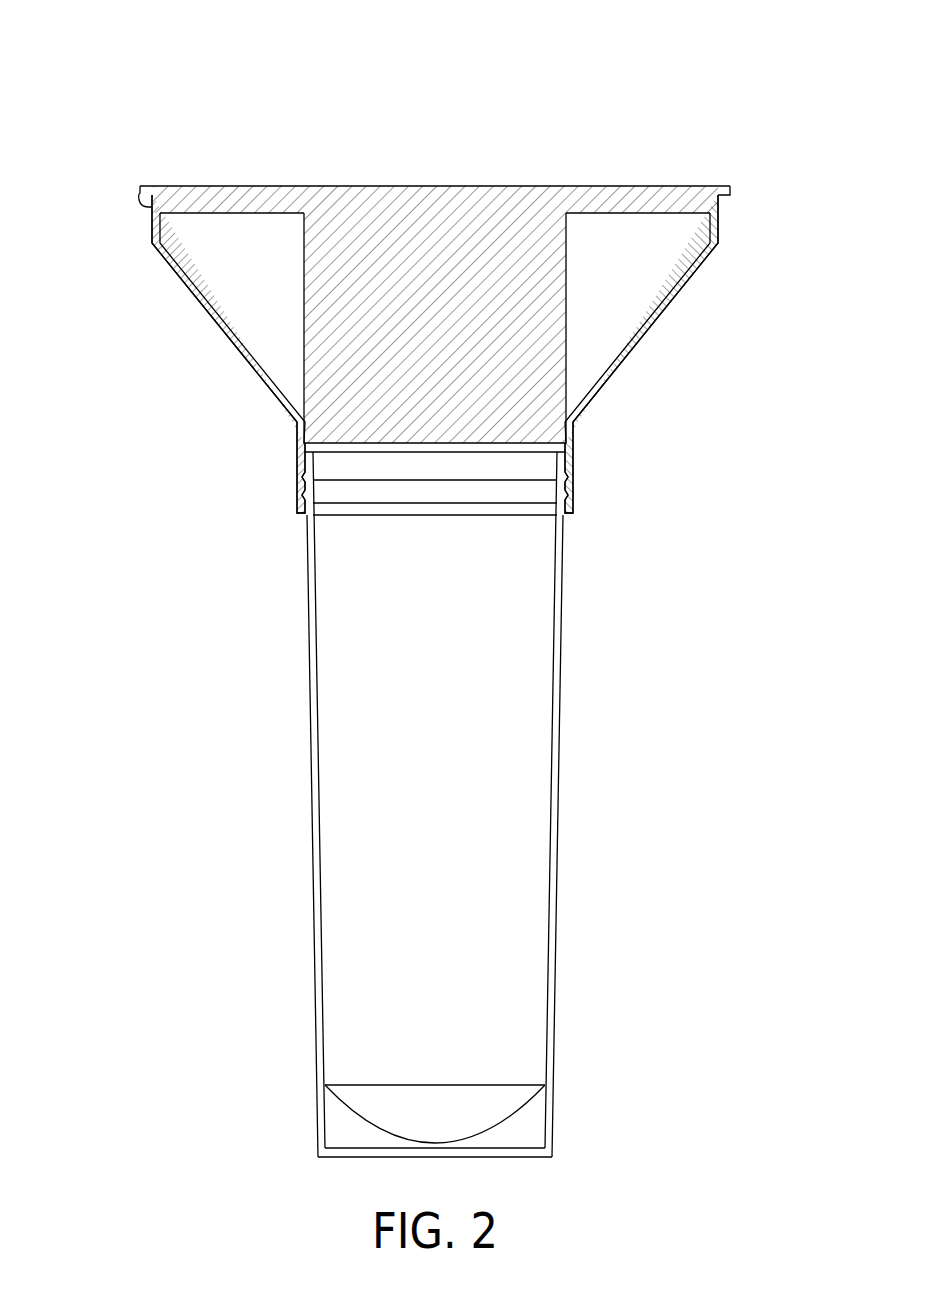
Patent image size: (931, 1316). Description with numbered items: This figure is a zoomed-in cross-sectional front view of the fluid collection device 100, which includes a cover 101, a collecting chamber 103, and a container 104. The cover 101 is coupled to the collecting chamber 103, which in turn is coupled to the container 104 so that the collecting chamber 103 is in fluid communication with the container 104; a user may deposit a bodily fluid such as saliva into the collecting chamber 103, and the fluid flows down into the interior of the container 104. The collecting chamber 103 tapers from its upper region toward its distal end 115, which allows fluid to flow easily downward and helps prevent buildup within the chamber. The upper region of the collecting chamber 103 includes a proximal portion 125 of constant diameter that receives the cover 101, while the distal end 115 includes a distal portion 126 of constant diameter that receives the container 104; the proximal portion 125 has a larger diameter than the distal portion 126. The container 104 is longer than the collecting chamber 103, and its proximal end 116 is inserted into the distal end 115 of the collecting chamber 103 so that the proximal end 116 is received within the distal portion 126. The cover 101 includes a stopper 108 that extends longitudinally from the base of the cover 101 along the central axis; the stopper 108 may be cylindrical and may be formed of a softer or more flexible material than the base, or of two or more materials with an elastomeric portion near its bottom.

The fluid collection device 100 is at (181, 84).
The cover 101 is at (148, 210).
The collecting chamber 103 is at (212, 321).
The container 104 is at (308, 647).
The stopper 108 is at (567, 320).
The distal end 115 is at (574, 505).
The proximal end 116 is at (308, 540).
The proximal portion 125 is at (721, 213).
The distal portion 126 is at (574, 465).